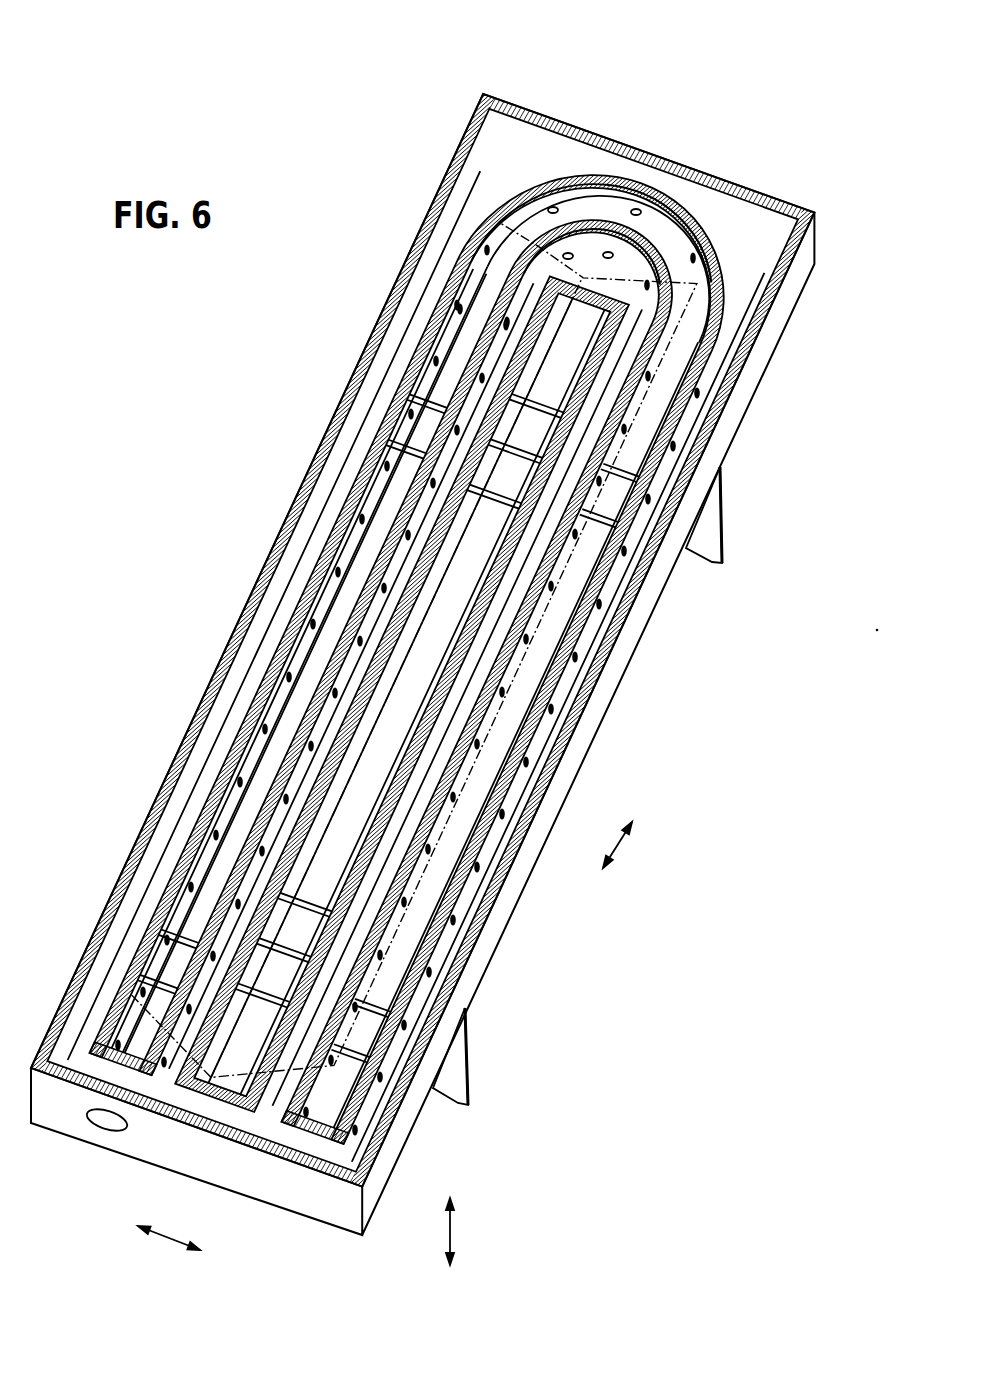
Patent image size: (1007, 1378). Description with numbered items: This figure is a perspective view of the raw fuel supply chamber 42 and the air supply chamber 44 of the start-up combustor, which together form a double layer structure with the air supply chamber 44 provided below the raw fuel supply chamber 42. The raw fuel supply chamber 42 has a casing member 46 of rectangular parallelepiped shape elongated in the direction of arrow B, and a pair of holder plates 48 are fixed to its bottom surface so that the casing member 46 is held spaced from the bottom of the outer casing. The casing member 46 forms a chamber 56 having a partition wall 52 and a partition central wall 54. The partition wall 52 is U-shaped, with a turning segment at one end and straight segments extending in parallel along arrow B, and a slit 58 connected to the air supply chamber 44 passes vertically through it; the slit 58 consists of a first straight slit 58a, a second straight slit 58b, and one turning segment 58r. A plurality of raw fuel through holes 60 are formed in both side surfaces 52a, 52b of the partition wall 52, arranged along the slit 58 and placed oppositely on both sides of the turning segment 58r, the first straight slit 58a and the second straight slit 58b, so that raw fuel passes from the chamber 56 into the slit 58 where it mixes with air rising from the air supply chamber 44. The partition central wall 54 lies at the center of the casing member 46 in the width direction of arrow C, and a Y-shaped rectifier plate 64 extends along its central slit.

The raw fuel supply chamber 42 is at (760, 224).
The air supply chamber 44 is at (612, 722).
The casing member 46 is at (583, 131).
The holder plates 48 is at (707, 552).
The partition wall 52 is at (429, 641).
The side surface of the partition wall 52a is at (402, 387).
The side surface of the partition wall 52b is at (480, 337).
The partition central wall 54 is at (527, 322).
The chamber 56 is at (618, 588).
The slit 58 is at (462, 647).
The first straight slit 58a is at (652, 390).
The second straight slit 58b is at (385, 497).
The turning segment 58r is at (695, 272).
The raw fuel through holes 60 is at (569, 254).
The rectifier plate 64 is at (521, 226).